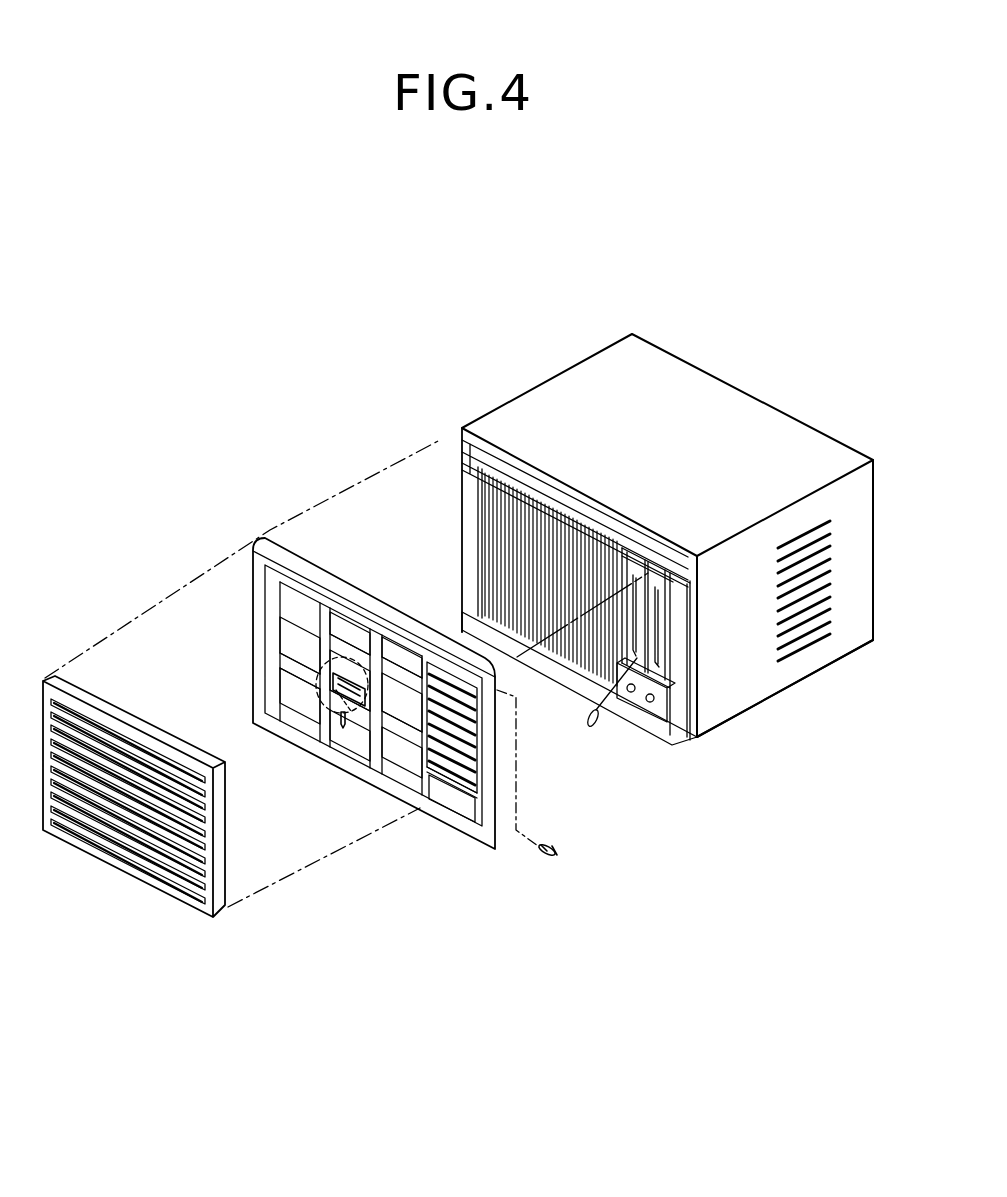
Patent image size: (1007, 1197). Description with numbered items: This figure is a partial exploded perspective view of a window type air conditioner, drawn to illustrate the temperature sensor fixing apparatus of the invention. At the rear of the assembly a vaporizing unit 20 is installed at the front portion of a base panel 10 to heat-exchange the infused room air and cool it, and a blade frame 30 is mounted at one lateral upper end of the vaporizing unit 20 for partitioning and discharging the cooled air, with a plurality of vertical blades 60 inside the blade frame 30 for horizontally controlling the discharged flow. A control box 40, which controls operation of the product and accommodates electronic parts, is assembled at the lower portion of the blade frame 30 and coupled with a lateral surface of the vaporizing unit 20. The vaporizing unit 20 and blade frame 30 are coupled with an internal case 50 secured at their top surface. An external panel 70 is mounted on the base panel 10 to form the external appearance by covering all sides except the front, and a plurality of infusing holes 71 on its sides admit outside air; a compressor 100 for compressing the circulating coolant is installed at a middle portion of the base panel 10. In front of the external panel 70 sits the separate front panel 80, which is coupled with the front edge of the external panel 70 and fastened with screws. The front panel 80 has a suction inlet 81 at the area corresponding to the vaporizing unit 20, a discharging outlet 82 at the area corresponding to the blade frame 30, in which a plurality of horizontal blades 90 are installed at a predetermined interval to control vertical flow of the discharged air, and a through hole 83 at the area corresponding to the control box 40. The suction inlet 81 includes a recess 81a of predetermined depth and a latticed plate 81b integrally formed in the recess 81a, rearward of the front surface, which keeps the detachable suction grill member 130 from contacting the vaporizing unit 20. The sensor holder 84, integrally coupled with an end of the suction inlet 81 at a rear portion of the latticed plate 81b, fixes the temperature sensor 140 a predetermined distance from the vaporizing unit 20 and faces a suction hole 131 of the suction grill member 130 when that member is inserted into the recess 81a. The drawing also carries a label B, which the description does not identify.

The base panel 10 is at (670, 742).
The vaporizing unit 20 is at (503, 556).
The blade frame 30 is at (683, 657).
The control box 40 is at (640, 702).
The internal case 50 is at (500, 450).
The vertical blades 60 is at (641, 626).
The external panel 70 is at (577, 363).
The infusing holes 71 is at (815, 598).
The front panel 80 is at (243, 548).
The suction inlet 81 is at (300, 593).
The recess 81a is at (295, 668).
The latticed plate 81b is at (282, 682).
The discharging outlet 82 is at (476, 732).
The through hole 83 is at (458, 806).
The sensor holder 84 is at (346, 676).
The horizontal blades 90 is at (448, 768).
The compressor 100 is at (790, 688).
The suction grill member 130 is at (230, 920).
The suction hole 131 is at (143, 833).
The temperature sensor 140 is at (594, 728).
The bolt B is at (342, 722).